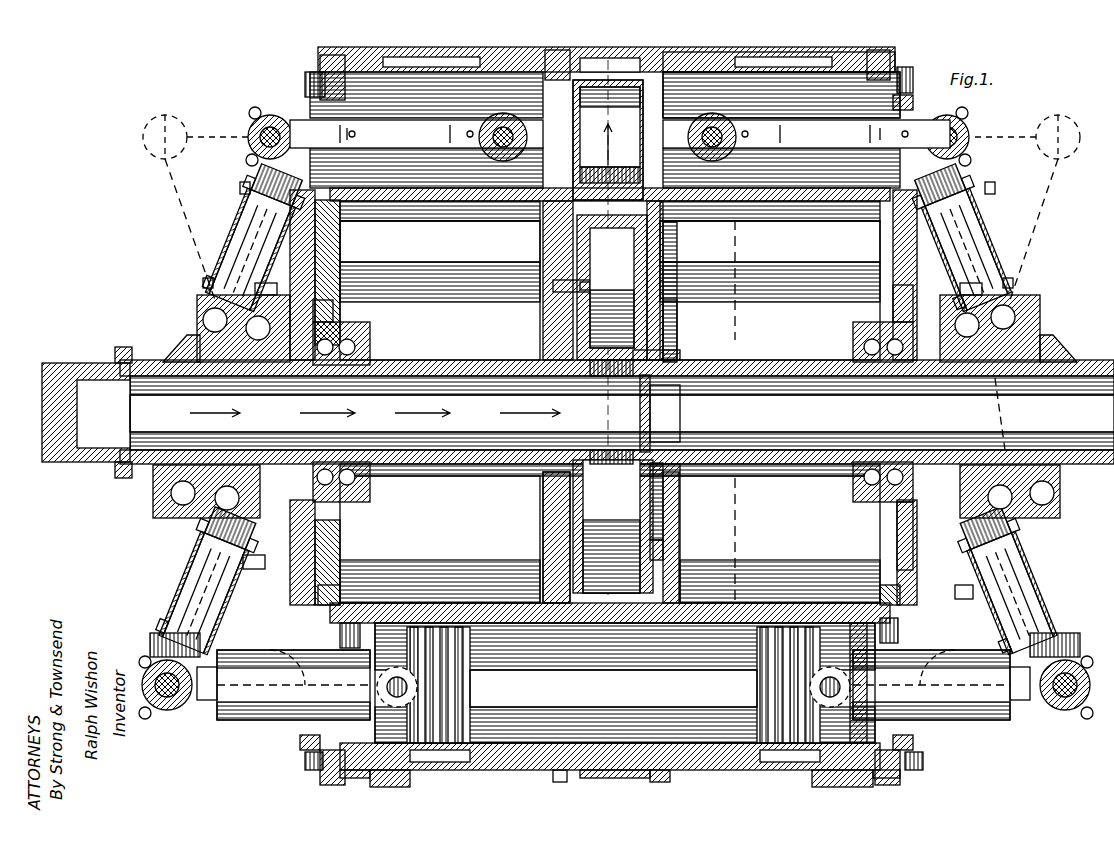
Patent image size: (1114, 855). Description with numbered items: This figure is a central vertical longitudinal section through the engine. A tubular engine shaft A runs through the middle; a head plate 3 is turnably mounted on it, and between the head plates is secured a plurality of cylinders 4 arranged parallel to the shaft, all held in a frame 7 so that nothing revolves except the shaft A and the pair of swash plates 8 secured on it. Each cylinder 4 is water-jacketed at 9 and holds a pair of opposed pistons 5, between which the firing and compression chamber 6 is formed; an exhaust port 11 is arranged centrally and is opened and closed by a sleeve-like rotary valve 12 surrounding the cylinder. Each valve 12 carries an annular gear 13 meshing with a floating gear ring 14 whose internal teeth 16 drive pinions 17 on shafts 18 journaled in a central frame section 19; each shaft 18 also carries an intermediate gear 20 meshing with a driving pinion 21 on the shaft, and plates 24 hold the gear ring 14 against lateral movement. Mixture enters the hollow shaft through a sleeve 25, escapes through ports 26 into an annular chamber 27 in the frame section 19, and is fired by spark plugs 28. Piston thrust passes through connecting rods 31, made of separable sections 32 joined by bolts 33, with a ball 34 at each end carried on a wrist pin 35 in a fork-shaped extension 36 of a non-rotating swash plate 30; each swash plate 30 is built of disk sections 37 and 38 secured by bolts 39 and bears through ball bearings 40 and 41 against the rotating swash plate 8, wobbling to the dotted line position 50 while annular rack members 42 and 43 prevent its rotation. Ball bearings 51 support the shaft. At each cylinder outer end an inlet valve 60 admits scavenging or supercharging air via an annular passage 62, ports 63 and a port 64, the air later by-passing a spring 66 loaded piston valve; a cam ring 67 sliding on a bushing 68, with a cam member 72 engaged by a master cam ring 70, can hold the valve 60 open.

The head plate 3 is at (890, 300).
The cylinder 4 is at (548, 464).
The opposed piston 5 is at (510, 225).
The firing and compression chamber 6 is at (705, 233).
The frame 7 is at (815, 778).
The swash plate 8 is at (165, 345).
The water jacket 9 is at (785, 215).
The exhaust port 11 is at (720, 60).
The rotary valve 12 is at (595, 778).
The annular gear 13 is at (665, 778).
The floating gear ring 14 is at (668, 495).
The internal teeth 16 is at (612, 287).
The pinion 17 is at (680, 295).
The shaft 18 is at (553, 290).
The central frame section 19 is at (565, 520).
The intermediate gear 20 is at (680, 322).
The driving pinion 21 is at (690, 350).
The plate 24 is at (668, 540).
The sleeve 25 is at (117, 417).
The port 26 is at (630, 412).
The annular chamber 27 is at (613, 526).
The spark plug 28 is at (545, 58).
The swash plate 30 is at (225, 240).
The connecting rod 31 is at (615, 428).
The connecting rod section 32 is at (336, 309).
The bolt 33 is at (416, 134).
The ball 34 is at (275, 117).
The wrist pin 35 is at (250, 143).
The fork-shaped extension 36 is at (205, 648).
The disk section 37 is at (205, 280).
The disk section 38 is at (275, 290).
The bolt 39 is at (240, 188).
The ball bearing 40 is at (205, 310).
The ball bearing 41 is at (268, 320).
The annular rack member 42 is at (305, 210).
The annular rack member 43 is at (330, 245).
The dotted line position 50 is at (165, 160).
The ball bearing 51 is at (355, 347).
The inlet valve 60 is at (325, 65).
The annular passage 62 is at (342, 632).
The port 63 is at (335, 760).
The port 64 is at (345, 780).
The spring 66 is at (608, 140).
The cam ring 67 is at (913, 80).
The bushing 68 is at (902, 102).
The master cam ring 70 is at (305, 82).
The cam member 72 is at (700, 52).
The engine shaft A is at (622, 419).